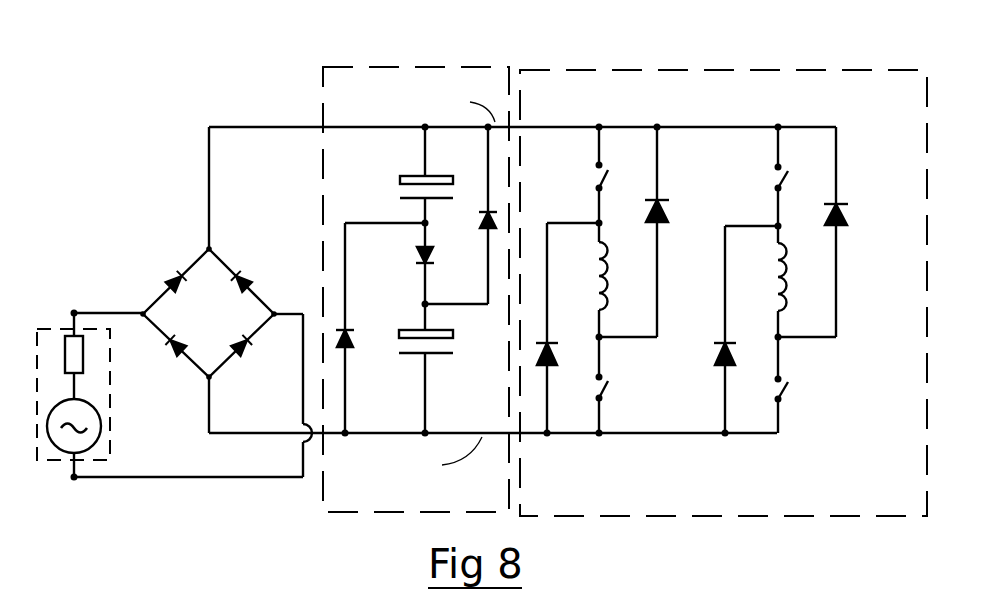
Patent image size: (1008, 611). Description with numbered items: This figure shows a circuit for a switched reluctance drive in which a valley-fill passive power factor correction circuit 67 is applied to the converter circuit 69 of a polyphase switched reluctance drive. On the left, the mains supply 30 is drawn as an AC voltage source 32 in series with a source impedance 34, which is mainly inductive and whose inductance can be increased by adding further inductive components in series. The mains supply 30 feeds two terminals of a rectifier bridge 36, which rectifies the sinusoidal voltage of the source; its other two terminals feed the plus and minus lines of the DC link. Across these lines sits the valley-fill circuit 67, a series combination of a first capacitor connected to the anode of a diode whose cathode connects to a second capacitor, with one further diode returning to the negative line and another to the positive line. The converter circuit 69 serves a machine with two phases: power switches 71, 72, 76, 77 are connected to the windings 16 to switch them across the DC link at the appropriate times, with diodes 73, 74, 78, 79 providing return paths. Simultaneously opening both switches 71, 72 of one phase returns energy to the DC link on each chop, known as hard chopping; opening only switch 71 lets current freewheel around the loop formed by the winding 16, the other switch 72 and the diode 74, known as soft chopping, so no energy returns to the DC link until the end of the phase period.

The windings 16 is at (613, 260).
The mains supply 30 is at (40, 460).
The AC voltage source 32 is at (107, 440).
The source impedance 34 is at (64, 357).
The rectifier bridge 36 is at (175, 310).
The valley-fill circuit 67 is at (395, 67).
The converter circuit 69 is at (717, 70).
The power switch 71 is at (598, 178).
The power switch 72 is at (612, 388).
The diode 73 is at (667, 195).
The diode 74 is at (538, 362).
The power switch 76 is at (777, 181).
The power switch 77 is at (788, 388).
The diode 78 is at (853, 208).
The diode 79 is at (714, 363).